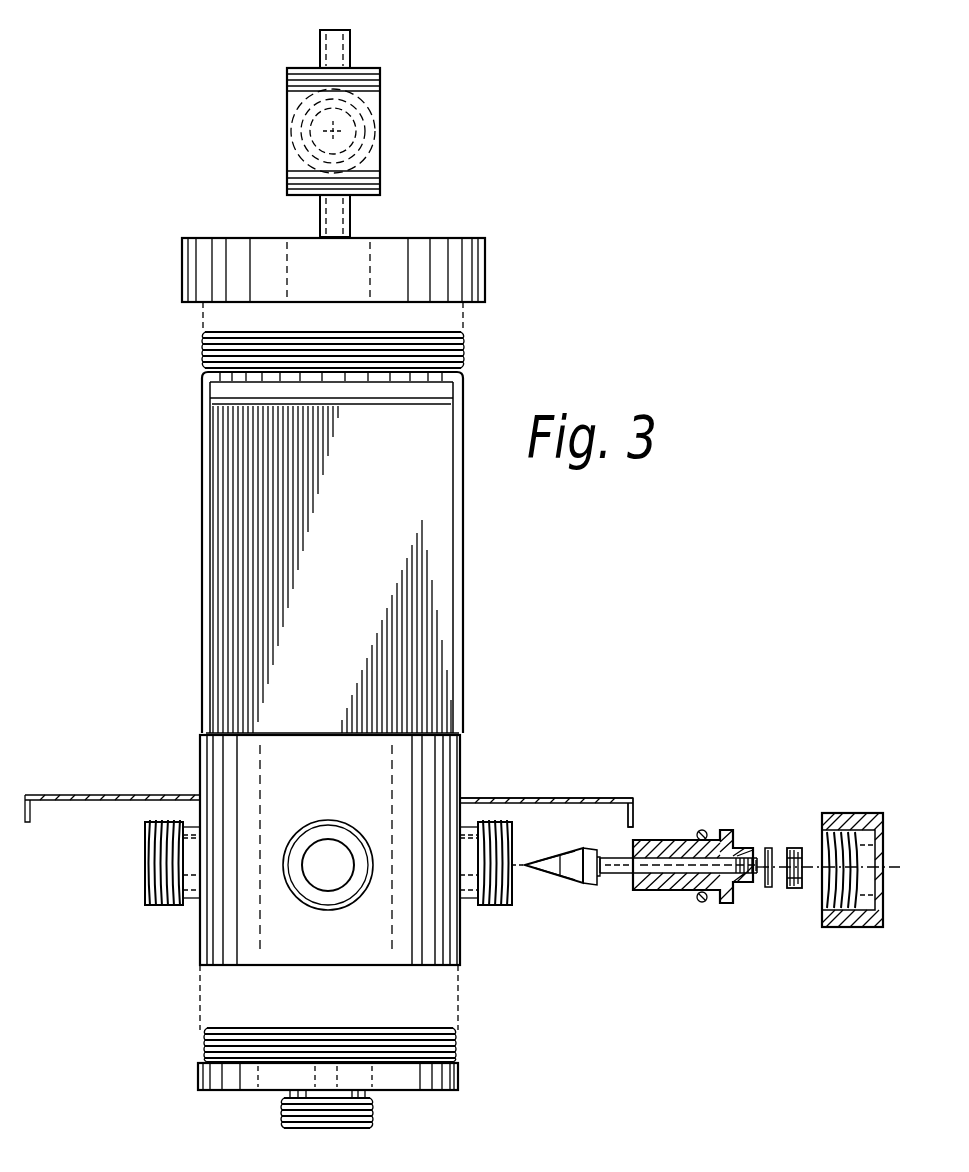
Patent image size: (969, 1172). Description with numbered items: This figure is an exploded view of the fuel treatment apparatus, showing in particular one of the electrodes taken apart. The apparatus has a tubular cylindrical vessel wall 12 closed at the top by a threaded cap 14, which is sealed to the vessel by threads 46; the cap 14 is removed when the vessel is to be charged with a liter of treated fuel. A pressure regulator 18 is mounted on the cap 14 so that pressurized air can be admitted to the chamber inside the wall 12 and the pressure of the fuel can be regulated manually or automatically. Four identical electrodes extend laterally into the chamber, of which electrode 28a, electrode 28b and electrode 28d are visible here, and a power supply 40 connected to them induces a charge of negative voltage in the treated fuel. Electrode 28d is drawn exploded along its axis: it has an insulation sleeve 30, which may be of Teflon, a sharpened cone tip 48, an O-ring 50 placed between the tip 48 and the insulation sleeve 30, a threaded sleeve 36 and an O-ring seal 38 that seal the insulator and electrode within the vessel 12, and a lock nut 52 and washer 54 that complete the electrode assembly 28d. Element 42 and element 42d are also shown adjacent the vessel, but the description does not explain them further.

The tubular cylindrical vessel wall 12 is at (228, 757).
The threaded cap 14 is at (471, 250).
The pressure regulator 18 is at (380, 95).
The electrode 28a is at (325, 828).
The electrode 28b is at (155, 875).
The electrode 28d is at (505, 880).
The insulation sleeve 30 is at (660, 890).
The threaded sleeve 36 is at (850, 920).
The O-ring seal 38 is at (700, 831).
The power supply 40 is at (230, 541).
The bottom cap 42 is at (458, 1078).
The mounting bracket 42d is at (540, 798).
The threads 46 is at (463, 353).
The sharpened cone tip 48 is at (535, 872).
The O-ring 50 is at (600, 856).
The lock nut 52 is at (797, 848).
The washer 54 is at (768, 890).